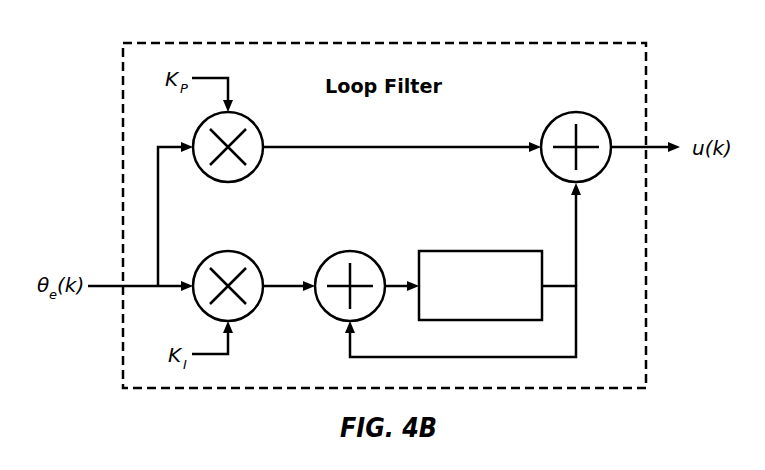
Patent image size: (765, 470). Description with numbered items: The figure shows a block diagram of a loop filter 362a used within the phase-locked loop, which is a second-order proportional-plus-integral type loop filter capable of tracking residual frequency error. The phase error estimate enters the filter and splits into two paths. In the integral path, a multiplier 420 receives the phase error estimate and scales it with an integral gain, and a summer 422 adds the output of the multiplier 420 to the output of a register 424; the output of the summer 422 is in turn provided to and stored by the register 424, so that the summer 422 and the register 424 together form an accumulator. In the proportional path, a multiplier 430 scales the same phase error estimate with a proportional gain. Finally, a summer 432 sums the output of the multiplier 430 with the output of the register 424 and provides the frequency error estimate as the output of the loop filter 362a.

The loop filter 362a is at (378, 43).
The multiplier 430 is at (253, 124).
The summer 432 is at (575, 112).
The multiplier 420 is at (225, 252).
The summer 422 is at (350, 252).
The register 424 is at (481, 251).